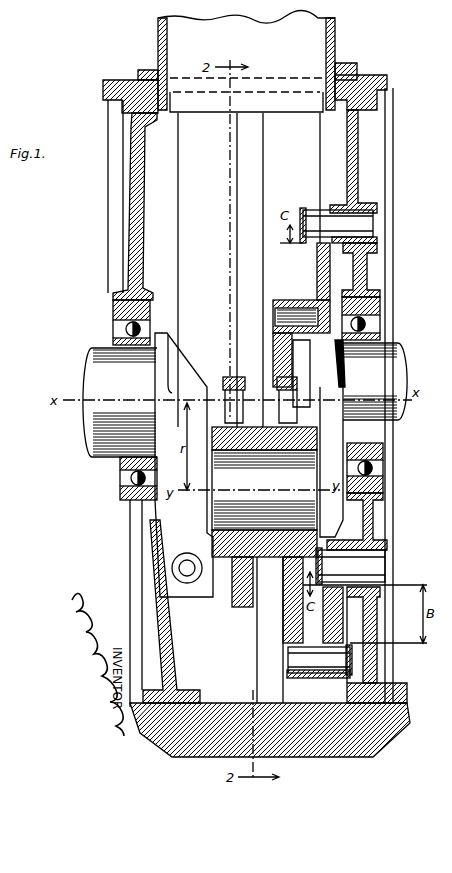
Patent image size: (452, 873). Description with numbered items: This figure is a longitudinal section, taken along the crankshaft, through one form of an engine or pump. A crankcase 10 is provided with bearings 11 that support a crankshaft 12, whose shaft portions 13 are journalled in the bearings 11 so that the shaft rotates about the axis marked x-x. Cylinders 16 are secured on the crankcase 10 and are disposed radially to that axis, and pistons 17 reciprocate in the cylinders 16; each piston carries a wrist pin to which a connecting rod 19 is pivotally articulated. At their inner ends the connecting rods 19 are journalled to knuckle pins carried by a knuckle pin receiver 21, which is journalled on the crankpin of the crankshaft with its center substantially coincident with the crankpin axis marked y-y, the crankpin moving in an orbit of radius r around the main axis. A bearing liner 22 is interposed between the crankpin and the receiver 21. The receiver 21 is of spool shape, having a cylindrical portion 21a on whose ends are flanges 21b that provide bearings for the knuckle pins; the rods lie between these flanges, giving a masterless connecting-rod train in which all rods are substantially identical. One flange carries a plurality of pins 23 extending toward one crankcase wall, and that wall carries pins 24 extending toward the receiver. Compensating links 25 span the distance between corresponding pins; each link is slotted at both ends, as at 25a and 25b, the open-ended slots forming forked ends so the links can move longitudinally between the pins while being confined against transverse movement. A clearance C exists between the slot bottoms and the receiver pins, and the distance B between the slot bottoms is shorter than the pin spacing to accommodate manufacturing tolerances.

The crankcase 10 is at (128, 215).
The bearings 11 is at (146, 318).
The crankshaft 12 is at (175, 337).
The shaft portions 13 is at (100, 352).
The cylinders 16 is at (158, 42).
The pistons 17 is at (246, 74).
The connecting rods 19 is at (258, 146).
The knuckle pin receiver 21 is at (275, 356).
The cylindrical portion 21a is at (268, 572).
The flanges 21b is at (296, 360).
The bearing liner 22 is at (263, 452).
The pins 23 is at (290, 318).
The pins 24 is at (347, 221).
The compensating links 25 is at (334, 275).
The slot 25a is at (312, 212).
The slot 25b is at (335, 348).